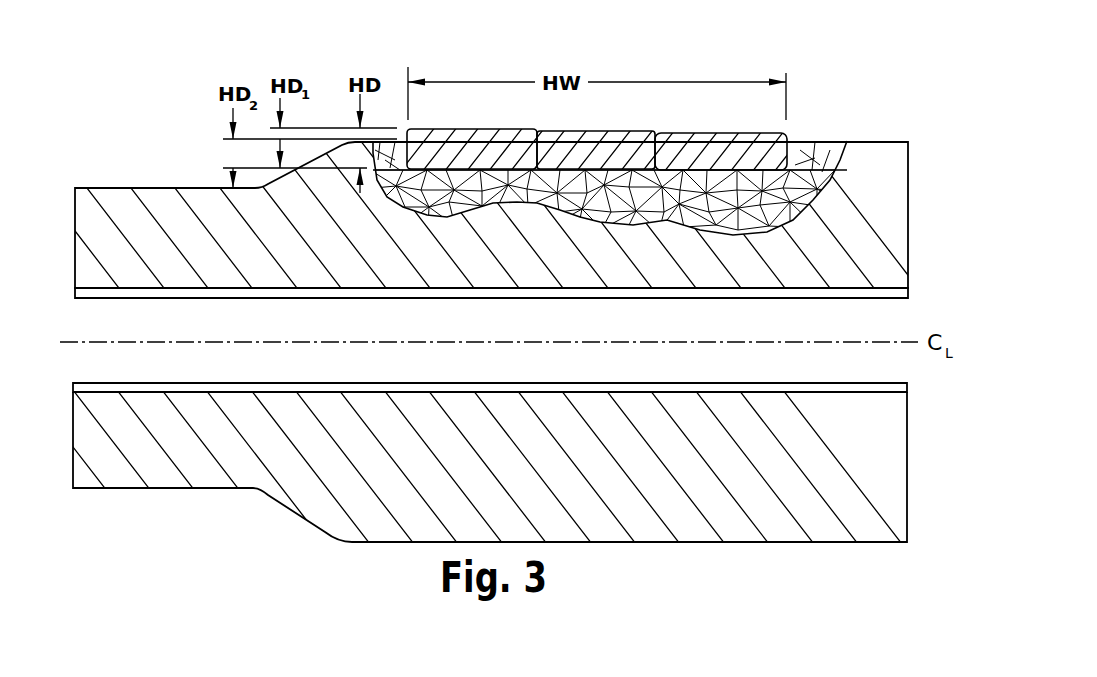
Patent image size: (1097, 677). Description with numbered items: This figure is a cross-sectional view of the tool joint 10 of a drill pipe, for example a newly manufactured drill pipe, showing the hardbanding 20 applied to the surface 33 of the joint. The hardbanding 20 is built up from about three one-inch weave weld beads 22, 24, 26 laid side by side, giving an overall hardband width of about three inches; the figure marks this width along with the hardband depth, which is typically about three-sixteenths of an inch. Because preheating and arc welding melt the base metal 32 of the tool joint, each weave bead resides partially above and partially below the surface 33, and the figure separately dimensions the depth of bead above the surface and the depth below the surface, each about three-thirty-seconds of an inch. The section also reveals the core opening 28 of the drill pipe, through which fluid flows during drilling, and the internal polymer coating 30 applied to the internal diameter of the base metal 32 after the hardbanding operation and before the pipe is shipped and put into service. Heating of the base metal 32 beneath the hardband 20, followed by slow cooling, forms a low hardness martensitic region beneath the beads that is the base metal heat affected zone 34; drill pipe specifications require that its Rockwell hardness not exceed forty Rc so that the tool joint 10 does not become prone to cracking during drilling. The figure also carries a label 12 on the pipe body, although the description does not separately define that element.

The tool joint 10 is at (203, 58).
The tubular body 12 is at (112, 206).
The hardbanding 20 is at (619, 130).
The weld bead 22 is at (458, 138).
The weld bead 24 is at (569, 142).
The weld bead 26 is at (699, 140).
The core opening 28 is at (112, 359).
The internal polymer coating 30 is at (908, 298).
The base metal 32 is at (888, 228).
The surface 33 is at (880, 142).
The base metal heat affected zone 34 is at (815, 172).